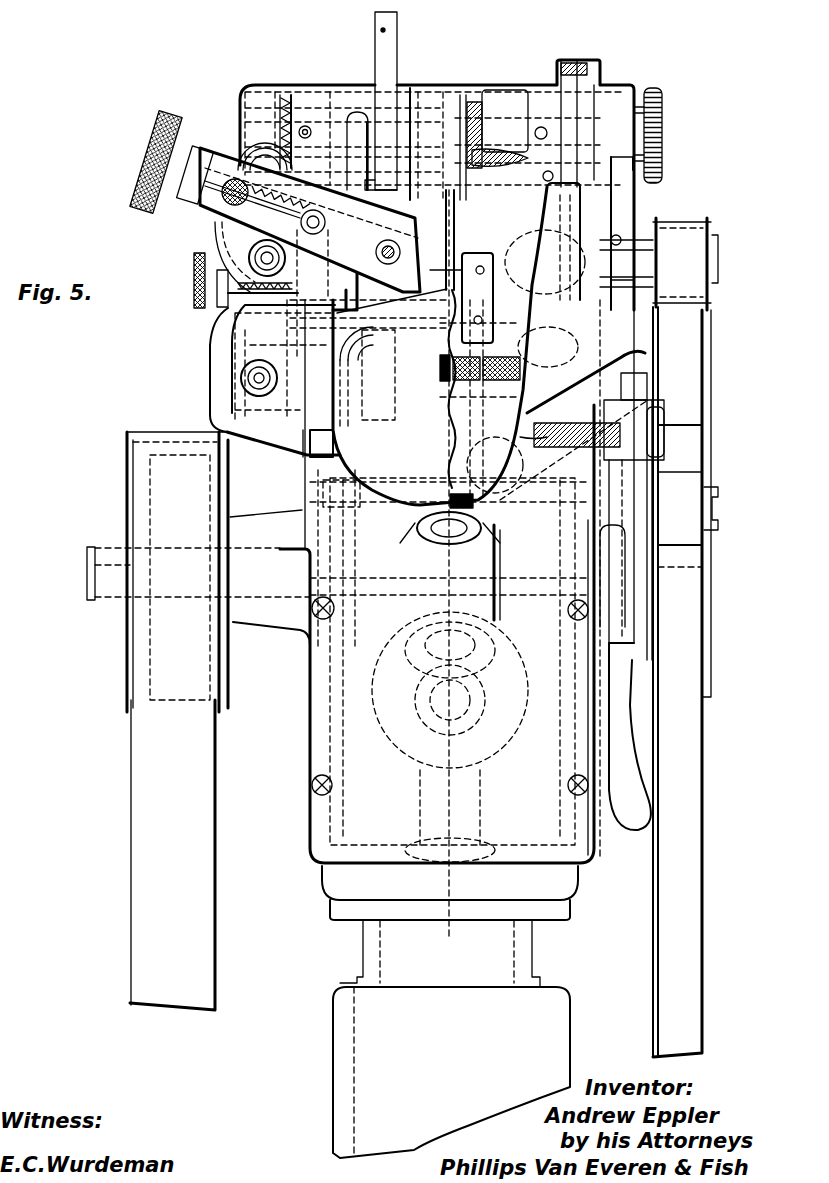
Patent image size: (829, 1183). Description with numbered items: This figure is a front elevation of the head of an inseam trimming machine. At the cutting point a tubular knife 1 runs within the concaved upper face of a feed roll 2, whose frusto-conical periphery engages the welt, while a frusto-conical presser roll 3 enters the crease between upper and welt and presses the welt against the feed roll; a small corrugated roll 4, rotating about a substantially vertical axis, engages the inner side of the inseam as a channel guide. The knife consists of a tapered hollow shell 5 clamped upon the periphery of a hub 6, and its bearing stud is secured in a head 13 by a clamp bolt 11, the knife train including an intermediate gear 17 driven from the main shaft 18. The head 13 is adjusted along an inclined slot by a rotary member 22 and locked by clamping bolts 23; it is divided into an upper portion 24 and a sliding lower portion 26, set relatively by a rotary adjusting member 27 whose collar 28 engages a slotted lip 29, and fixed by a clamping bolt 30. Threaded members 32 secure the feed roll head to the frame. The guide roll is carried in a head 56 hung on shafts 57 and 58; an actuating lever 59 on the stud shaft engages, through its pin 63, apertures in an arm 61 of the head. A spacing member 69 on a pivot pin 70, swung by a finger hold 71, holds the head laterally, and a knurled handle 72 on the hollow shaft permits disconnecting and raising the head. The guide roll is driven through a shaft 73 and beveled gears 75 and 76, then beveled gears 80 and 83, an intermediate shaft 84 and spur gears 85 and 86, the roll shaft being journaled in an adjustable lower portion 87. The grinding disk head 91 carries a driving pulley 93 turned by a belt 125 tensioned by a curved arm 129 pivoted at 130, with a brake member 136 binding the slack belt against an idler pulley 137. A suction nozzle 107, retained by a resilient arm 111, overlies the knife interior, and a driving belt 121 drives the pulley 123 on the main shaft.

The tubular knife 1 is at (447, 287).
The feed roll 2 is at (470, 475).
The presser roll 3 is at (449, 546).
The corrugated roll 4 is at (478, 502).
The hollow shell 5 is at (385, 483).
The hub 6 is at (449, 945).
The clamp bolt 11 is at (270, 360).
The head 13 is at (237, 350).
The intermediate gear 17 is at (345, 462).
The main shaft 18 is at (87, 570).
The rotary member 22 is at (145, 160).
The clamping bolts 23 is at (232, 205).
The upper portion 24 is at (221, 242).
The lower portion 26 is at (243, 418).
The rotary adjusting member 27 is at (194, 280).
The collar 28 is at (217, 290).
The slotted lip 29 is at (225, 297).
The clamping bolt 30 is at (285, 262).
The threaded members 32 is at (312, 615).
The head 56 is at (510, 80).
The shaft 57 is at (420, 106).
The shaft 58 is at (514, 121).
The actuating lever 59 is at (382, 30).
The arm 61 is at (397, 22).
The pin 63 is at (388, 90).
The spacing member 69 is at (572, 140).
The pivot pin 70 is at (600, 70).
The finger hold 71 is at (545, 179).
The knurled handle 72 is at (662, 150).
The shaft 73 is at (320, 124).
The beveled gear 75 is at (283, 95).
The beveled gear 76 is at (252, 148).
The beveled gear 80 is at (470, 100).
The beveled gear 83 is at (470, 160).
The intermediate shaft 84 is at (566, 208).
The spur gear 85 is at (509, 354).
The spur gear 86 is at (495, 428).
The lower portion 87 is at (538, 462).
The head 91 is at (560, 253).
The driving pulley 93 is at (712, 230).
The suction nozzle 107 is at (646, 352).
The resilient arm 111 is at (647, 380).
The driving belt 121 is at (135, 768).
The pulley 123 is at (127, 500).
The belt 125 is at (704, 355).
The curved arm 129 is at (624, 512).
The pivot 130 is at (665, 425).
The brake member 136 is at (718, 500).
The idler pulley 137 is at (704, 627).